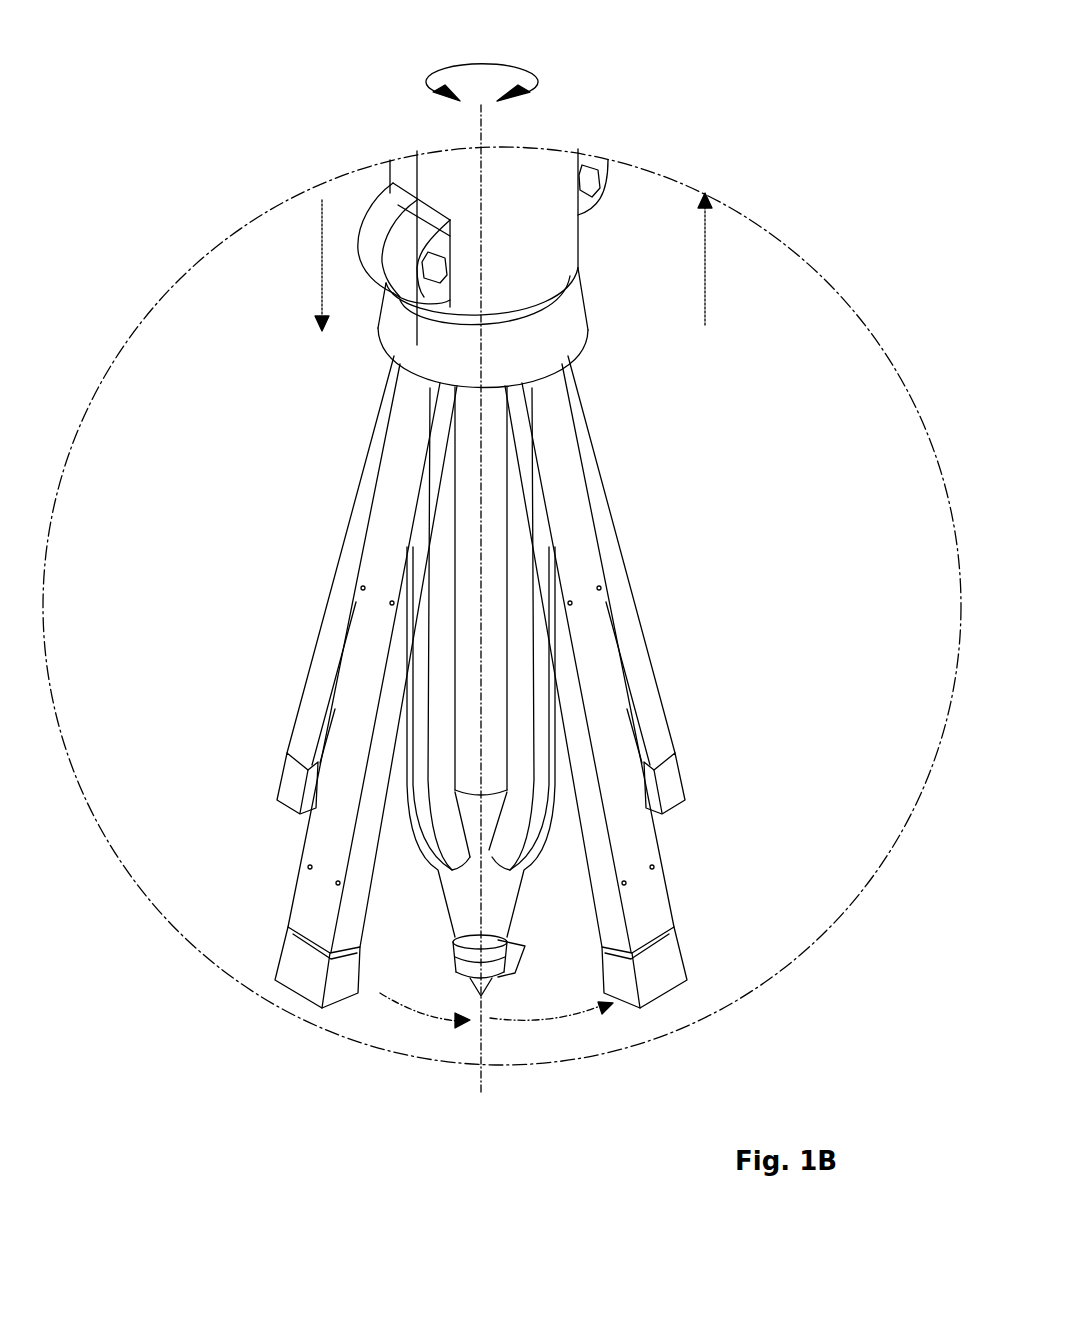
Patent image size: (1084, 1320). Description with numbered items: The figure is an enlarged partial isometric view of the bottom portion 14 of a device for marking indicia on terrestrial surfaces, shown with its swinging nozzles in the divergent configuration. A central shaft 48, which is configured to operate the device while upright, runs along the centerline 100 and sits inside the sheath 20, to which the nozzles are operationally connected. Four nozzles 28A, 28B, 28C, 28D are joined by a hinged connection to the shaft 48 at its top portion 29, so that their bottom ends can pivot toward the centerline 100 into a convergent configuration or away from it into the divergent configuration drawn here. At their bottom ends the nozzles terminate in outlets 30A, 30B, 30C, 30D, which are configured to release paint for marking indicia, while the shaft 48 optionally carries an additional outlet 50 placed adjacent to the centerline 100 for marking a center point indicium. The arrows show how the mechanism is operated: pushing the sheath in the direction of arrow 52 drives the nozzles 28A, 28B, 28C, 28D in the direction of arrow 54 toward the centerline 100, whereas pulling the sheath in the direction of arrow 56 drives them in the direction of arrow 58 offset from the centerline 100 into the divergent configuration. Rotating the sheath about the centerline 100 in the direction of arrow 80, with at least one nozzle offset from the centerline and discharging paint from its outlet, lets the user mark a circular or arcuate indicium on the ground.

The bottom portion 14 is at (880, 137).
The sheath 20 is at (540, 237).
The top portion 29 is at (562, 385).
The nozzle 28A is at (605, 716).
The nozzle 28B is at (330, 832).
The nozzle 28C is at (597, 565).
The nozzle 28D is at (345, 545).
The outlet 30A is at (660, 958).
The outlet 30B is at (295, 985).
The outlet 30C is at (680, 766).
The outlet 30D is at (285, 760).
The shaft 48 is at (472, 883).
The outlet 50 is at (525, 950).
The arrow 52 is at (322, 260).
The arrow 54 is at (413, 1013).
The arrow 56 is at (712, 252).
The arrow 58 is at (532, 1023).
The arrow 80 is at (422, 83).
The centerline 100 is at (482, 122).